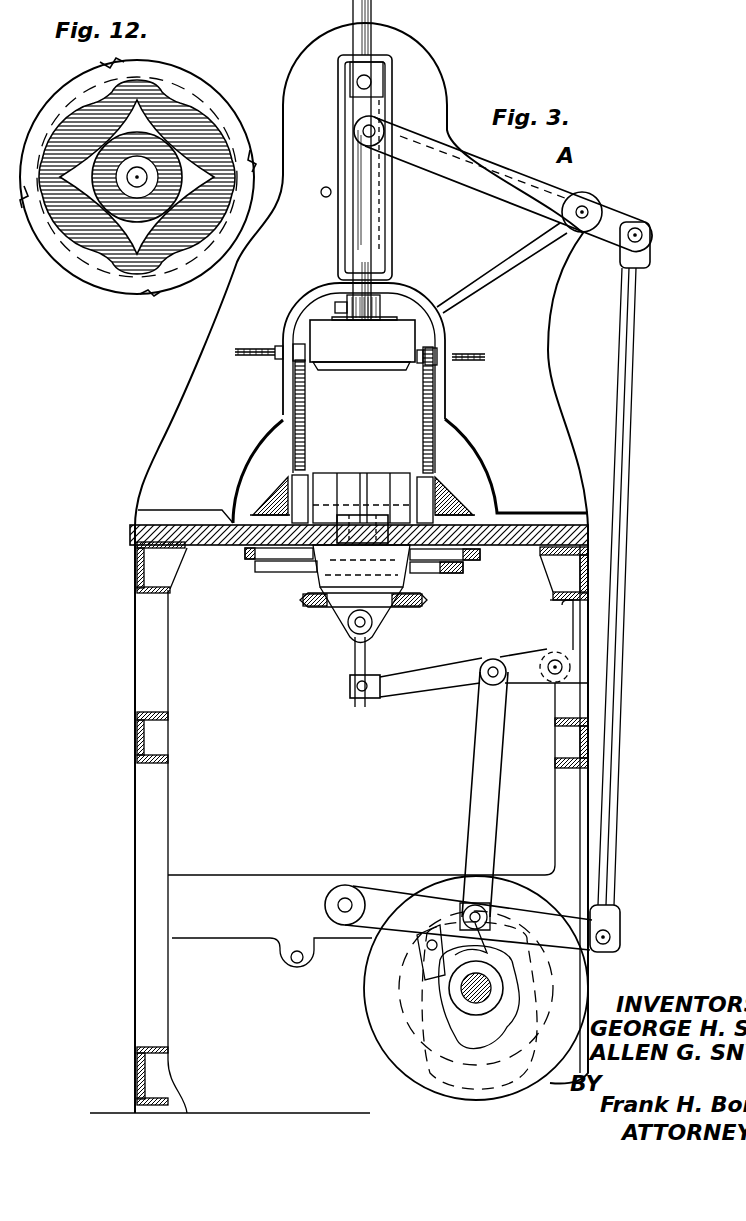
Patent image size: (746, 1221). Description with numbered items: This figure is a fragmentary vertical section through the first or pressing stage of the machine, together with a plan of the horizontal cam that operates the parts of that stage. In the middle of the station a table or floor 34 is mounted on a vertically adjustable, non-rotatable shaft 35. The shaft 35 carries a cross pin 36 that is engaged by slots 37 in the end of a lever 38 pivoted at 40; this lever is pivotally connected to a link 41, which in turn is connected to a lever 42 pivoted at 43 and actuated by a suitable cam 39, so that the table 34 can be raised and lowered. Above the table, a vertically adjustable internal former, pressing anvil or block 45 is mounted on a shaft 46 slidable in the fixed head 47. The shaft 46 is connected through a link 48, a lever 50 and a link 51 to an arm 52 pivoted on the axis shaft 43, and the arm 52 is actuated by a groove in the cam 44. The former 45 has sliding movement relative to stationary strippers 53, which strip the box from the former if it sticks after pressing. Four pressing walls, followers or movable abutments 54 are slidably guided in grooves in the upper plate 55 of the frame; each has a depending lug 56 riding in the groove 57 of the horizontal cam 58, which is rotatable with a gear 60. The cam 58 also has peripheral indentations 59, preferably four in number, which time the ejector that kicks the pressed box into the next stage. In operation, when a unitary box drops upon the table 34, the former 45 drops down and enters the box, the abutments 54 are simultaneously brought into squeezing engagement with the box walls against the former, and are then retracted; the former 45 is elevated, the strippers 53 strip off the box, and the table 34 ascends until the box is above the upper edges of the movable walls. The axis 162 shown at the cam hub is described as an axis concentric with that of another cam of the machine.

In FIG. 3, the table or floor 34 is at (377, 505).
In FIG. 3, the vertically adjustable non-rotatable shaft 35 is at (363, 655).
In FIG. 3, the cross pin 36 is at (362, 685).
In FIG. 3, the slots 37 is at (362, 680).
In FIG. 3, the lever 38 is at (450, 680).
In FIG. 3, the cam 39 is at (420, 940).
In FIG. 3, the pivot 40 is at (550, 670).
In FIG. 3, the link 41 is at (483, 763).
In FIG. 3, the lever 42 is at (385, 902).
In FIG. 3, the axis shaft 43 is at (343, 900).
In FIG. 3, the cam 44 is at (423, 1022).
In FIG. 3, the internal former pressing anvil or block 45 is at (362, 332).
In FIG. 3, the shaft 46 is at (370, 212).
In FIG. 3, the fixed head 47 is at (339, 568).
In FIG. 3, the link 48 is at (366, 110).
In FIG. 3, the lever 50 is at (518, 193).
In FIG. 3, the link 51 is at (633, 510).
In FIG. 3, the arm 52 is at (577, 923).
In FIG. 3, the stationary strippers 53 is at (302, 338).
In FIG. 3, the pressing walls, followers or movable abutments 54 is at (285, 495).
In FIG. 3, the upper plate of the frame 55 is at (497, 533).
In FIG. 3, the depending lug 56 is at (290, 563).
In FIG. 12, the groove 57 is at (103, 248).
In FIG. 12, the horizontal cam 58 is at (67, 266).
In FIG. 3, the horizontal cam 58 is at (275, 557).
In FIG. 12, the peripheral indentations 59 is at (112, 63).
In FIG. 3, the peripheral indentations 59 is at (247, 558).
In FIG. 3, the gear 60 is at (327, 607).
In FIG. 3, the axis 162 is at (473, 997).